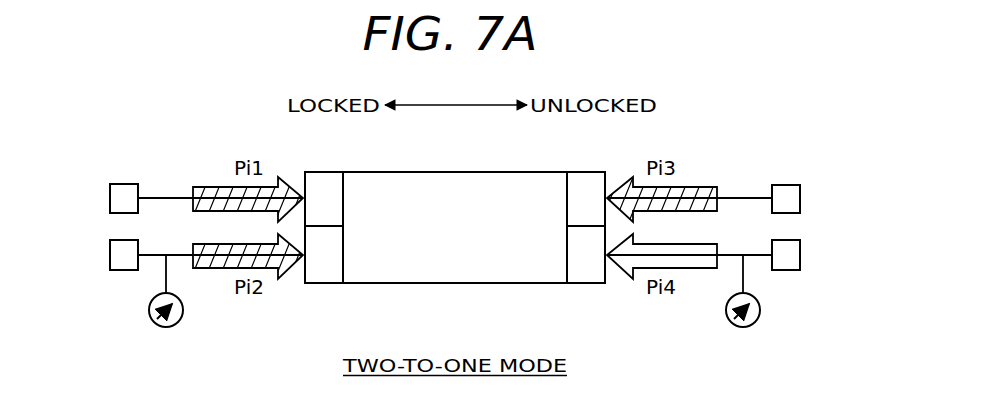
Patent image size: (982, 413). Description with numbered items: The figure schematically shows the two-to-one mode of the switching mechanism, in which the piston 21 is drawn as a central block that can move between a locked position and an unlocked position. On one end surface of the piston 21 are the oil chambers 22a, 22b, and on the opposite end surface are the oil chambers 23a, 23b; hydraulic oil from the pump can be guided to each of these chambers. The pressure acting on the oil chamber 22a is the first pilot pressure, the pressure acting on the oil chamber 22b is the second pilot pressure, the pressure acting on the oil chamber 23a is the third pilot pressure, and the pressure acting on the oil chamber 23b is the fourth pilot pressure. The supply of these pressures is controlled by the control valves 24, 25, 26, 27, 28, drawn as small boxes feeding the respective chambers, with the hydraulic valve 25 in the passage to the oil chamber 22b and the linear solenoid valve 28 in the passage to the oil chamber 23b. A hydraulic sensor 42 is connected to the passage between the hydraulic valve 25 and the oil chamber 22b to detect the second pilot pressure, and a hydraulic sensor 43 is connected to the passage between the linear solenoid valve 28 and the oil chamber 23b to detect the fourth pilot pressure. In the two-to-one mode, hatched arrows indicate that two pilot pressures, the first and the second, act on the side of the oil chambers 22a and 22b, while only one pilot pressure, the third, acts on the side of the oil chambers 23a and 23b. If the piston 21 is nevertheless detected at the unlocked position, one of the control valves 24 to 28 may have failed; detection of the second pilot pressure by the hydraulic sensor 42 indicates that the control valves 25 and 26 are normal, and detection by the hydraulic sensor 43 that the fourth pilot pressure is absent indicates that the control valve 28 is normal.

The piston 21 is at (493, 283).
The oil chamber 22a is at (327, 188).
The oil chamber 22b is at (325, 265).
The oil chamber 23a is at (585, 188).
The oil chamber 23b is at (585, 265).
The control valve 24 is at (110, 193).
The hydraulic valve 25 is at (110, 248).
The control valve 26 is at (124, 255).
The control valve 27 is at (800, 193).
The linear solenoid valve 28 is at (800, 248).
The hydraulic sensor 42 is at (174, 326).
The hydraulic sensor 43 is at (751, 326).